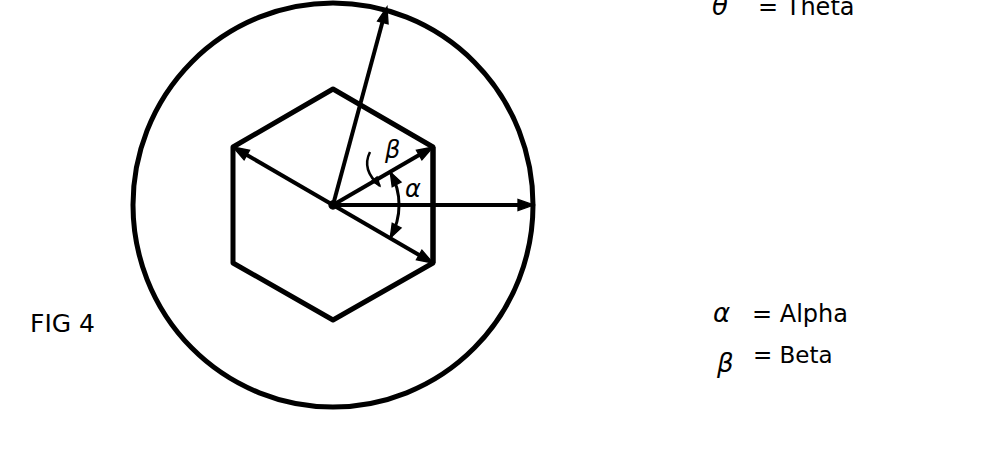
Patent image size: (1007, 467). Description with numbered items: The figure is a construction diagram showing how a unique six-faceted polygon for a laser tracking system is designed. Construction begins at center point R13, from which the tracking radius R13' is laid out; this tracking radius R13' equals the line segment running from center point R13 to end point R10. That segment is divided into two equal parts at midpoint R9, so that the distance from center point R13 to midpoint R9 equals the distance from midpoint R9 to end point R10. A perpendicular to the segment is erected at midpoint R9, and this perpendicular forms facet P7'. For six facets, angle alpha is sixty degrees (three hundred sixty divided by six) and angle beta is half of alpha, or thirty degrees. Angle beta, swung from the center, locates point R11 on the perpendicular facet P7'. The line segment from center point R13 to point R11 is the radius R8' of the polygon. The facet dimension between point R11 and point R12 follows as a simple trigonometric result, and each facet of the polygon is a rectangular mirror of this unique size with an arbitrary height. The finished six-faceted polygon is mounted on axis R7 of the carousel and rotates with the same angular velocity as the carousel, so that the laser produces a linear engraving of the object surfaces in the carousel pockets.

The axis R7 is at (331, 215).
The center point R13 is at (288, 216).
The radius of the polygon R8' is at (283, 162).
The point on perpendicular R11 is at (437, 145).
The facet end point R12 is at (437, 265).
The midpoint R9 is at (437, 203).
The end point of tracking radius R10 is at (514, 208).
The tracking radius R13' is at (348, 106).
The facet P7' is at (471, 212).